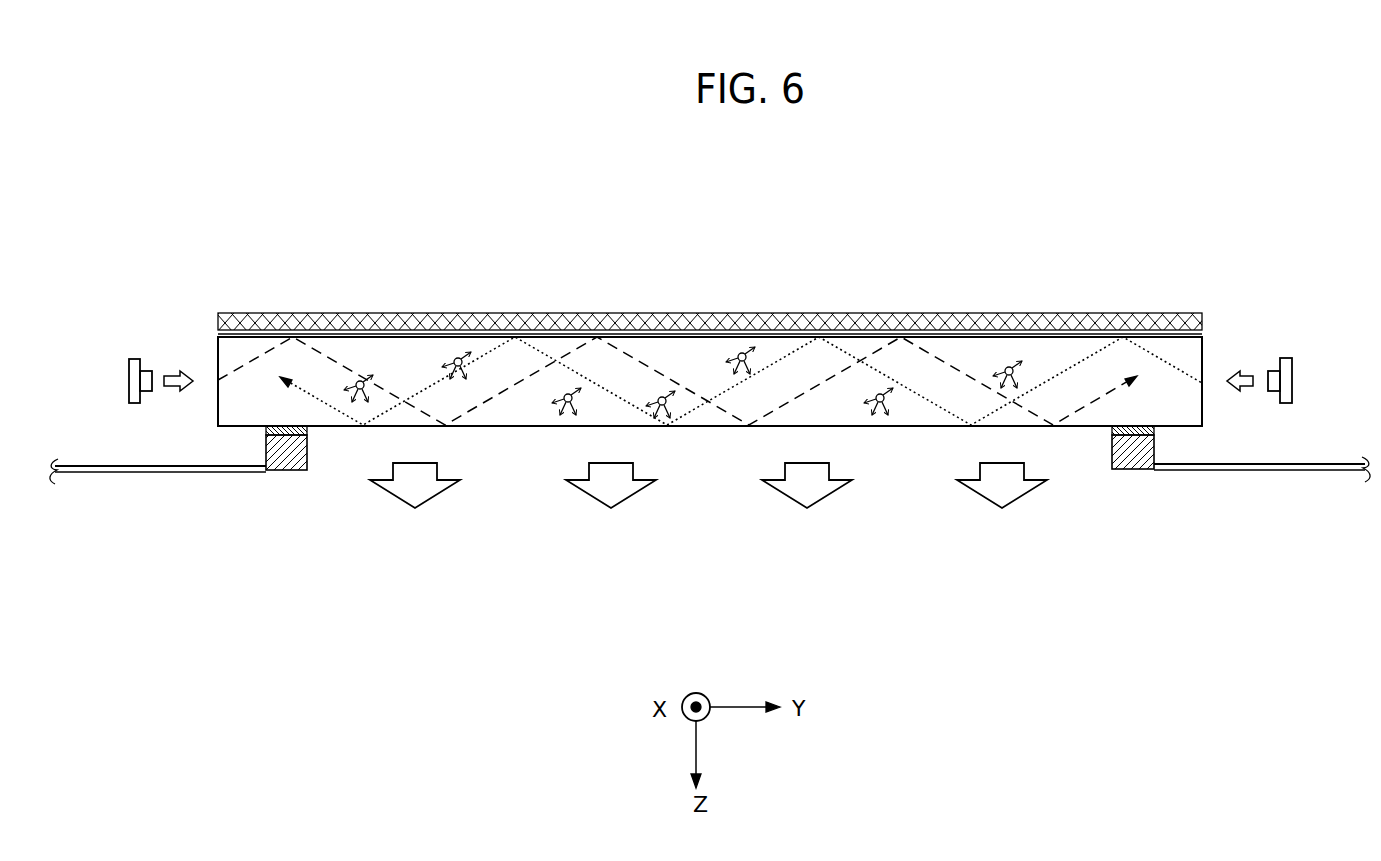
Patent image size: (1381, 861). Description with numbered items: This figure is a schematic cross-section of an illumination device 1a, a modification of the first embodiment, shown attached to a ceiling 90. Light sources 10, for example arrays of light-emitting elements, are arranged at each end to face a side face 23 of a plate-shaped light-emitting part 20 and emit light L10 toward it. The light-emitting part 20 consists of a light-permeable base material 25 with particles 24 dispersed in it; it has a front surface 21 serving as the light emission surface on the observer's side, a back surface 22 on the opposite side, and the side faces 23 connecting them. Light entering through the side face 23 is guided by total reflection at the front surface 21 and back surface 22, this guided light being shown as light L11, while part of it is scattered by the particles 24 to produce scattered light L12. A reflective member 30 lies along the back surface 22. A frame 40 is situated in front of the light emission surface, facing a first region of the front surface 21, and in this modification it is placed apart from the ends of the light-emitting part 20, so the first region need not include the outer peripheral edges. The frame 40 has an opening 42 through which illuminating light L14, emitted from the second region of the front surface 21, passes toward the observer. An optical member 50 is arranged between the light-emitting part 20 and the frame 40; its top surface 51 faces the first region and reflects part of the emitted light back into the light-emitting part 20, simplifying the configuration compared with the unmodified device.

The illumination device 1a is at (1058, 208).
The light source 10 is at (139, 358).
The light L10 is at (166, 372).
The light-emitting part 20 is at (416, 352).
The front surface 21 is at (903, 428).
The back surface 22 is at (978, 336).
The side face 23 is at (216, 351).
The particles 24 is at (358, 380).
The base material 25 is at (672, 352).
The reflective member 30 is at (718, 313).
The frame 40 is at (300, 468).
The opening 42 is at (1143, 464).
The optical member 50 is at (266, 430).
The top surface 51 is at (288, 404).
The ceiling 90 is at (108, 472).
The light undergoing total reflection L11 is at (258, 350).
The scattered light L12 is at (472, 352).
The illuminating light L14 is at (612, 507).